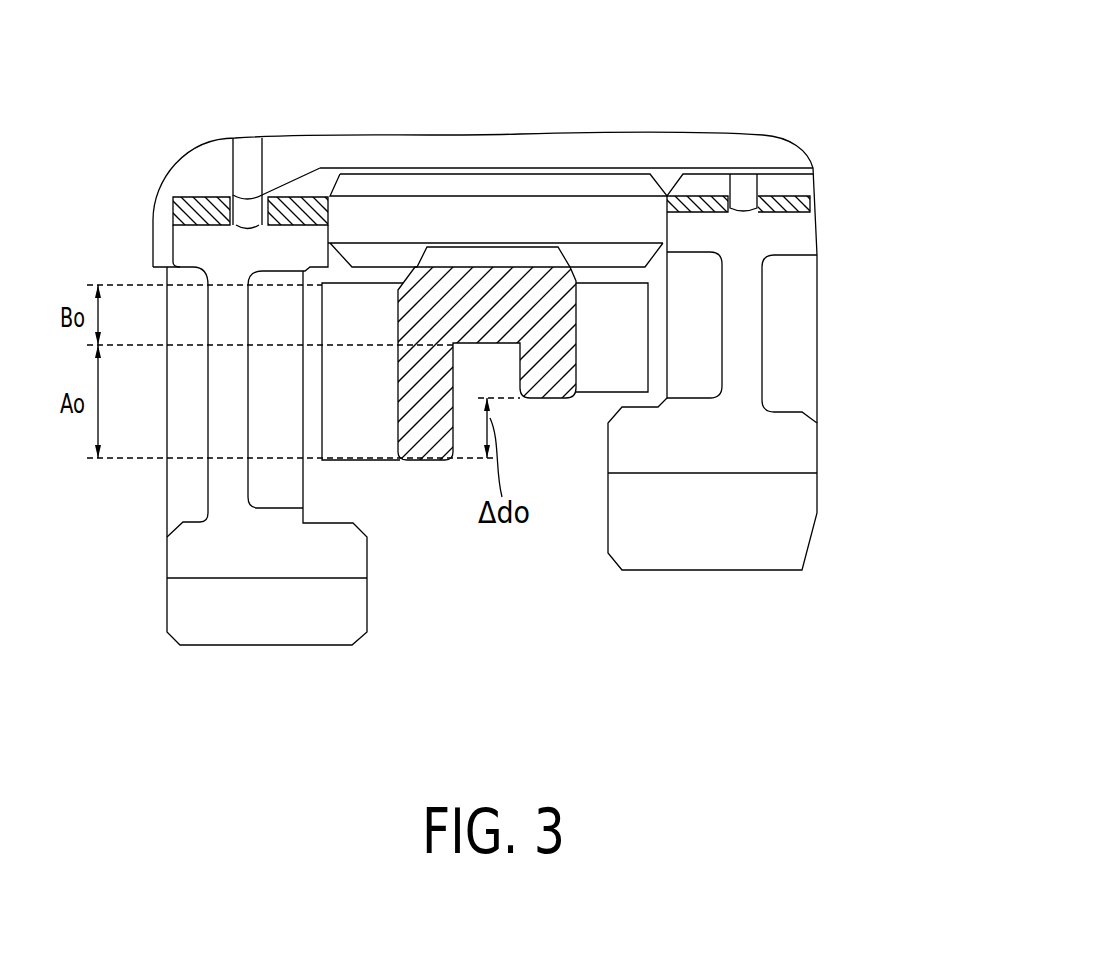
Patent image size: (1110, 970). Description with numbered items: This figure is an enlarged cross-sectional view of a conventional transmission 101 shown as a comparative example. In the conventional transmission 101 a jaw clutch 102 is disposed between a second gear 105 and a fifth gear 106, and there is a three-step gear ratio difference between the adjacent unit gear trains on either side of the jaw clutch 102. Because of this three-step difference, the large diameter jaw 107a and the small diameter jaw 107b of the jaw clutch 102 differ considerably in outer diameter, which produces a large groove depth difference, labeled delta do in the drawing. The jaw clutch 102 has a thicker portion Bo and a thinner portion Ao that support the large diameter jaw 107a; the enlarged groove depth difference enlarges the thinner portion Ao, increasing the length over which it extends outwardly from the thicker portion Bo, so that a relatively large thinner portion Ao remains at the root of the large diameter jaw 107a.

The conventional transmission 101 is at (731, 102).
The jaw clutch 102 is at (425, 460).
The second gear 105 is at (265, 647).
The fifth gear 106 is at (710, 572).
The large diameter jaw 107a is at (380, 460).
The small diameter jaw 107b is at (592, 397).